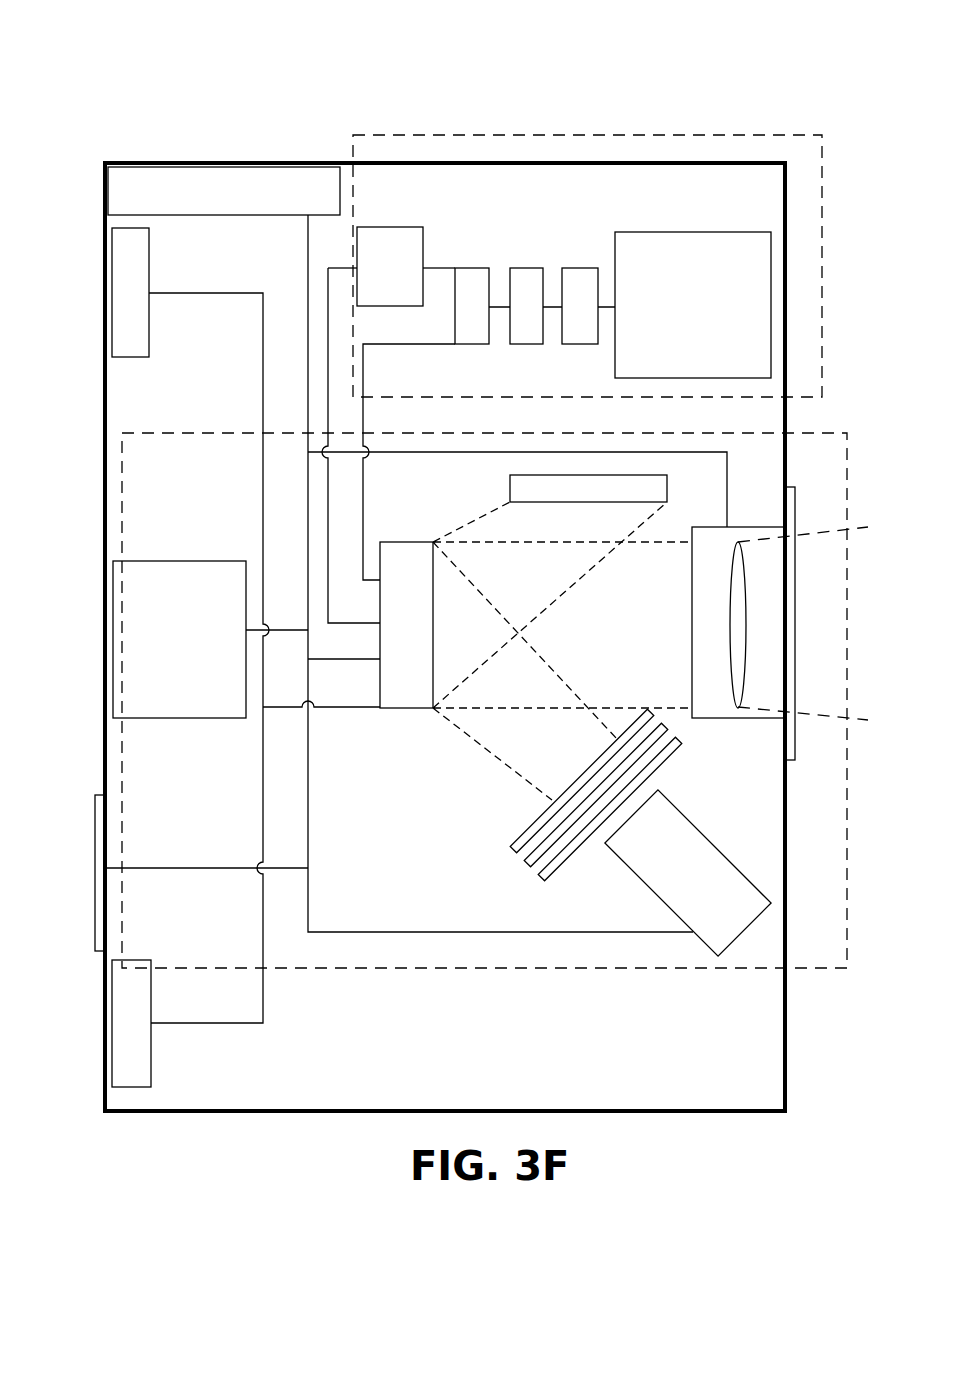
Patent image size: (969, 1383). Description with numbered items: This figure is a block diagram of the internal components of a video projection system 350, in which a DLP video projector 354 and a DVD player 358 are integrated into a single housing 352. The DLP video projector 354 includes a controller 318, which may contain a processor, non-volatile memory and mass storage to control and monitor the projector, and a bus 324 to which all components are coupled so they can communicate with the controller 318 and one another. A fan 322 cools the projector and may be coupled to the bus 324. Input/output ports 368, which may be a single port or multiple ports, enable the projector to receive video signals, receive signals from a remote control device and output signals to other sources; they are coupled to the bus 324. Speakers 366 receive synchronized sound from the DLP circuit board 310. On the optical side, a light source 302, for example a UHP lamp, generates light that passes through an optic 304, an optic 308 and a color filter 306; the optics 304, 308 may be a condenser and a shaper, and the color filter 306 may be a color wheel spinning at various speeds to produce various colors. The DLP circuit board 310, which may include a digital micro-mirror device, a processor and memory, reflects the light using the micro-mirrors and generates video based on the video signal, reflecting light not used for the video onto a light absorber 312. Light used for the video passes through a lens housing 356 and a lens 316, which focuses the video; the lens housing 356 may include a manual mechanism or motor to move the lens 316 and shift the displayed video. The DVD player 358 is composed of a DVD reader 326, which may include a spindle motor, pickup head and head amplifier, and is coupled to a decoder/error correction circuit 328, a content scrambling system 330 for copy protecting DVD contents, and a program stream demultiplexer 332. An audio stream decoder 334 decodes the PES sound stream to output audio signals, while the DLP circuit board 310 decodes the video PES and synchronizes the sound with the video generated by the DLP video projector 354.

The light source 302 is at (675, 887).
The optic 304 is at (542, 878).
The color filter 306 is at (530, 868).
The optic 308 is at (514, 848).
The DLP circuit board 310 is at (410, 695).
The light absorber 312 is at (510, 490).
The lens 316 is at (728, 648).
The controller 318 is at (179, 639).
The fan 322 is at (200, 163).
The bus 324 is at (315, 802).
The DVD reader 326 is at (693, 305).
The decoder/error correction circuit 328 is at (583, 268).
The content scrambling system 330 is at (527, 268).
The program stream demultiplexer 332 is at (455, 268).
The audio stream decoder 334 is at (388, 235).
The video projection system 350 is at (587, 212).
The single housing 352 is at (760, 1113).
The DLP video projector 354 is at (803, 433).
The lens housing 356 is at (800, 637).
The DVD player 358 is at (822, 168).
The speakers 366 is at (93, 1163).
The input/output ports 368 is at (83, 838).